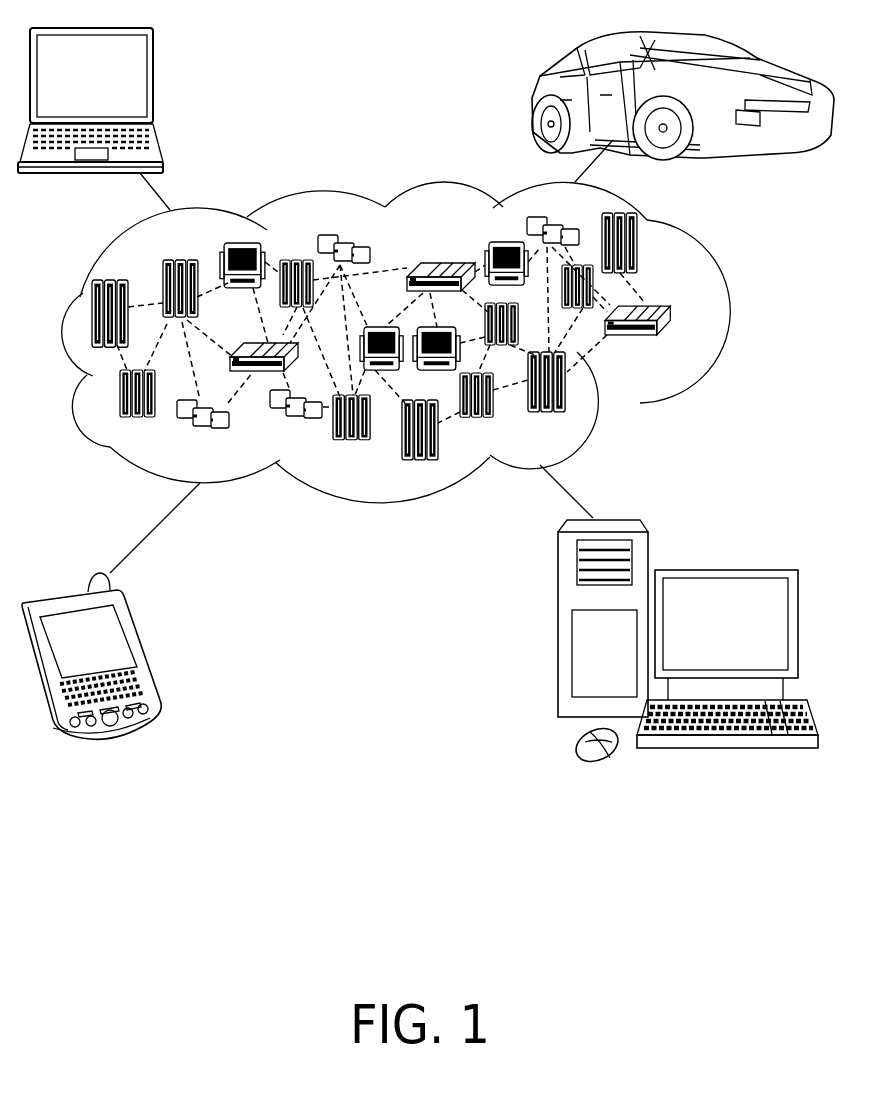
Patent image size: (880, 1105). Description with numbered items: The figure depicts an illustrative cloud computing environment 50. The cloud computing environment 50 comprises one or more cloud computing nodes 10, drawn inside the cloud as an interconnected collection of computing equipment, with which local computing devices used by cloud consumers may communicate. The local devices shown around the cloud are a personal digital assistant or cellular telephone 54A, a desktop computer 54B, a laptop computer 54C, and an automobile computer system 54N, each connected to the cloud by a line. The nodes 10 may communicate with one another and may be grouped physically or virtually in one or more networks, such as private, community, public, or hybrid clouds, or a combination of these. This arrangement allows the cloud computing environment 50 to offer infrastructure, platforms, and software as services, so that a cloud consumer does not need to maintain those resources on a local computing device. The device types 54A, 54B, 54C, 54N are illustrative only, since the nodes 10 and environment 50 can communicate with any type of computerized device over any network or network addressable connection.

The cloud computing node 10 is at (681, 351).
The cloud computing environment 50 is at (727, 318).
The personal digital assistant or cellular telephone 54A is at (143, 648).
The desktop computer 54B is at (725, 568).
The laptop computer 54C is at (152, 82).
The automobile computer system 54N is at (533, 100).